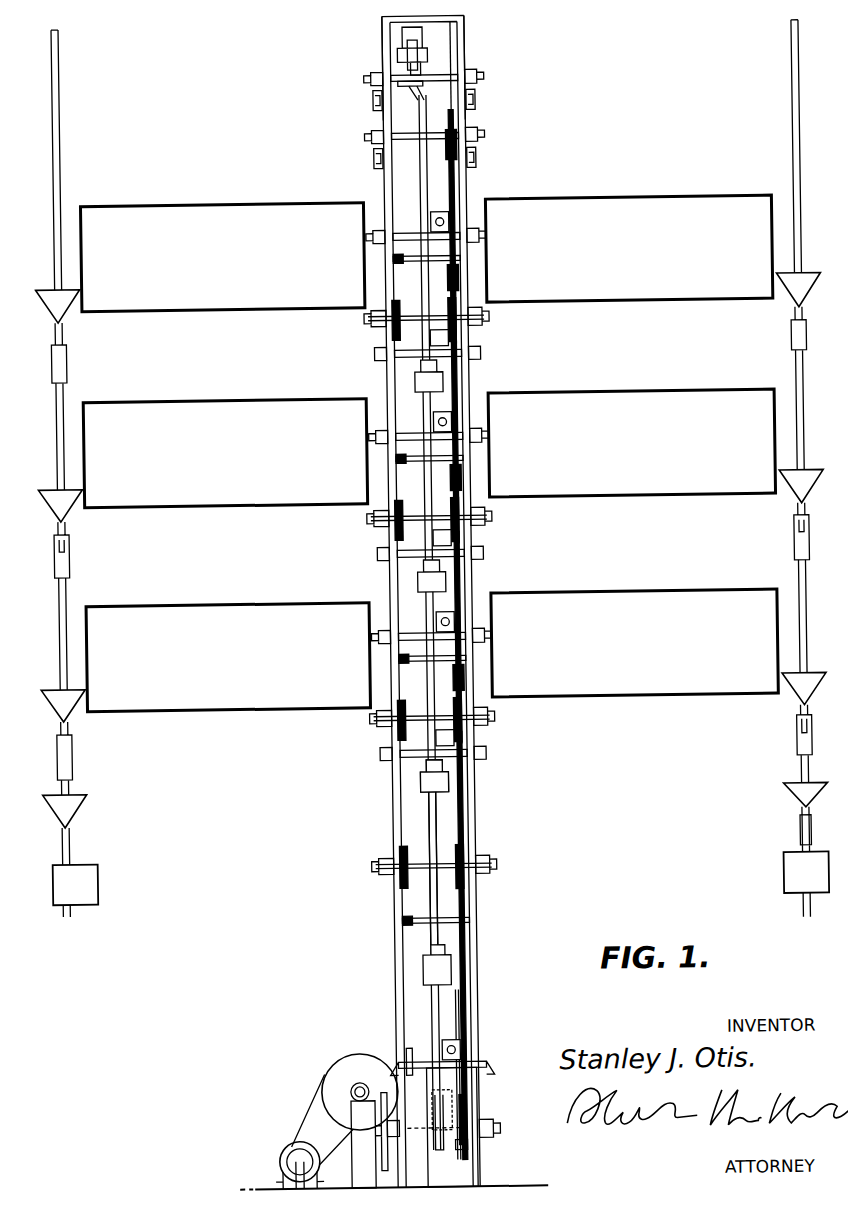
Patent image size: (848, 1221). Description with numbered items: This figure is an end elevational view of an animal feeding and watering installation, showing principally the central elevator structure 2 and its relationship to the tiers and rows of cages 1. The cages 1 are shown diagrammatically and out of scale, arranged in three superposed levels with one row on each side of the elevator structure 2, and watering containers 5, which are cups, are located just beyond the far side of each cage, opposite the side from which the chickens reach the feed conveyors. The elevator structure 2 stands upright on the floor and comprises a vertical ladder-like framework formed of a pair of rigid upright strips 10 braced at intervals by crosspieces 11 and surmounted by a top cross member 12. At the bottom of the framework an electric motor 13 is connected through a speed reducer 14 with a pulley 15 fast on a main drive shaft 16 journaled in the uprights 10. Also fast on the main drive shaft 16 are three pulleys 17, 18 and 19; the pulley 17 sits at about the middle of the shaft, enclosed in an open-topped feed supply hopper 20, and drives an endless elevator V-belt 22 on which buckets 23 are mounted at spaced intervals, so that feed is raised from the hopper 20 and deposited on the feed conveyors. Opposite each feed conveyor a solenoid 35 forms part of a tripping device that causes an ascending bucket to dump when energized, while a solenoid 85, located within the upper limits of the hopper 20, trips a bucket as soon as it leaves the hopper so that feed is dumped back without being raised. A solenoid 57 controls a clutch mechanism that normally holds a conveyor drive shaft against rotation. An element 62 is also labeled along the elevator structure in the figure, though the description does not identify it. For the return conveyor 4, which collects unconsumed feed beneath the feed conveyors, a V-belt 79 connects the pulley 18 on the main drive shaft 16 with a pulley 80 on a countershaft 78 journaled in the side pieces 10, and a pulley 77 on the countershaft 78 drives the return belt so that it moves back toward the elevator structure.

The cages 1 is at (252, 217).
The elevator structure 2 is at (389, 51).
The return conveyor 4 is at (432, 386).
The containers 5 is at (68, 298).
The upright strips 10 is at (391, 962).
The crosspieces 11 is at (412, 260).
The top cross member 12 is at (395, 22).
The electric motor 13 is at (272, 1136).
The speed reducer 14 is at (350, 1112).
The pulley 15 is at (368, 1087).
The main drive shaft 16 is at (484, 1130).
The pulley 17 is at (443, 1115).
The pulley 18 is at (452, 1151).
The pulley 19 is at (454, 1141).
The feed supply hopper 20 is at (438, 1105).
The elevator V-belt 22 is at (427, 805).
The buckets 23 is at (432, 770).
The solenoid 35 is at (454, 218).
The solenoid 57 is at (452, 336).
The drive chain 62 is at (459, 118).
The pulley 77 is at (397, 852).
The countershaft 78 is at (485, 869).
The V-belt 79 is at (449, 998).
The pulley 80 is at (457, 851).
The solenoid 85 is at (445, 1046).